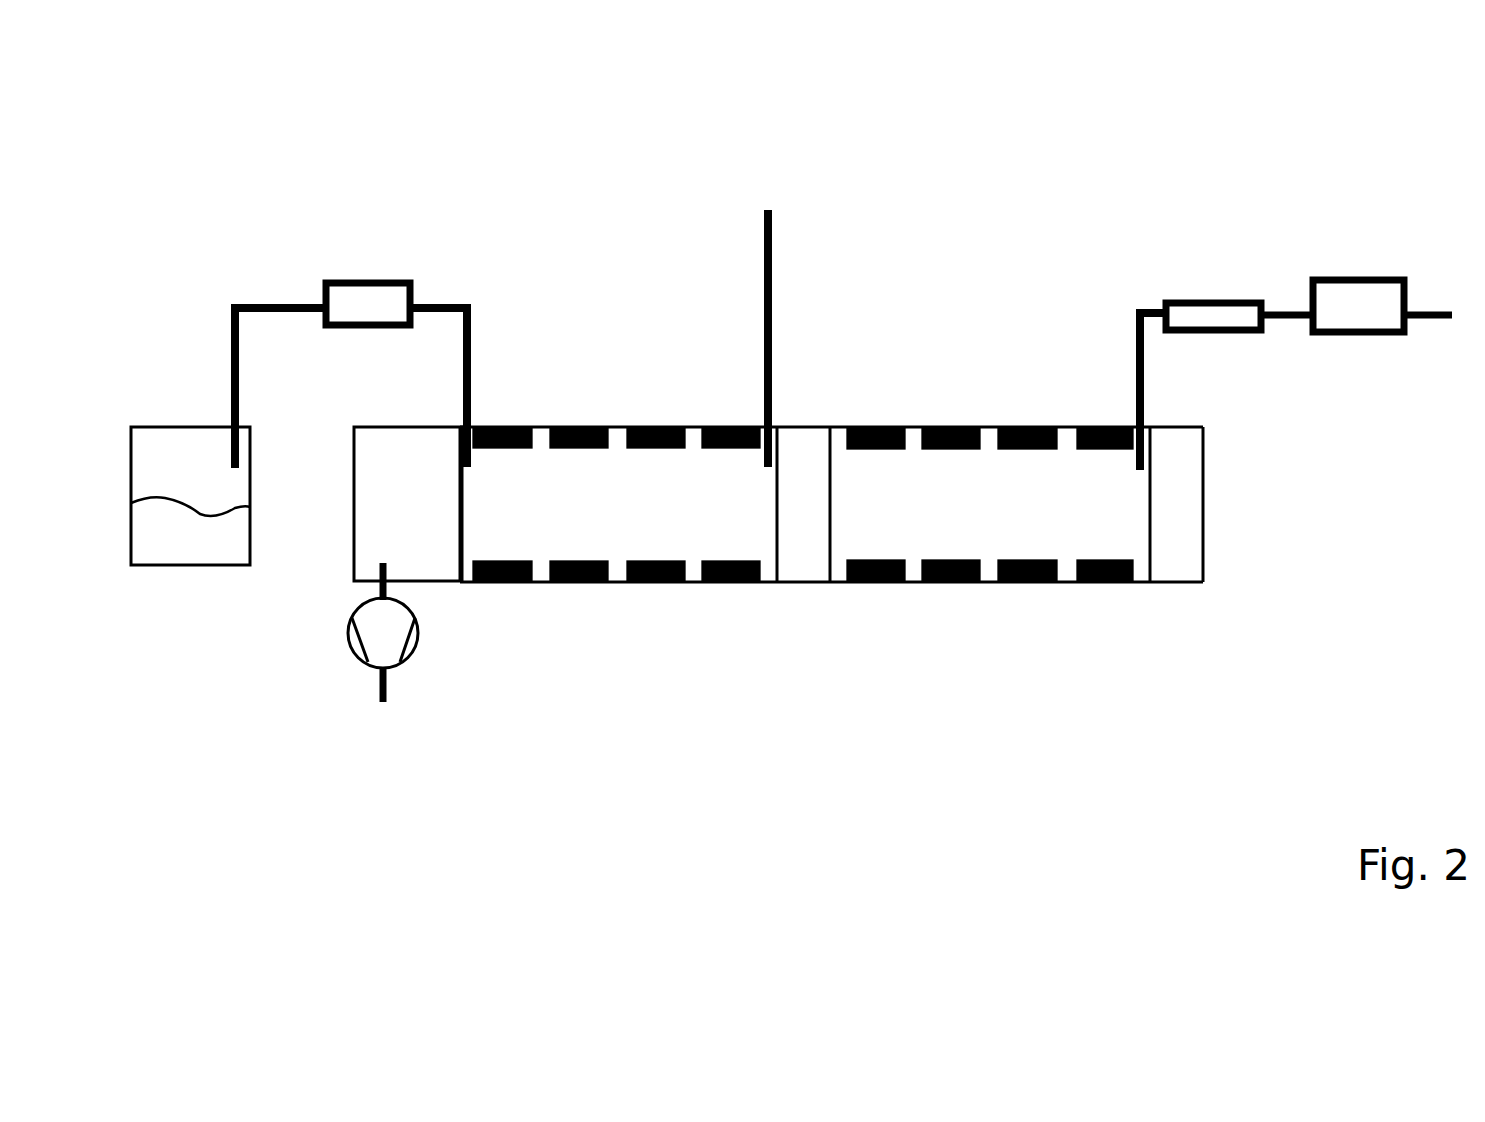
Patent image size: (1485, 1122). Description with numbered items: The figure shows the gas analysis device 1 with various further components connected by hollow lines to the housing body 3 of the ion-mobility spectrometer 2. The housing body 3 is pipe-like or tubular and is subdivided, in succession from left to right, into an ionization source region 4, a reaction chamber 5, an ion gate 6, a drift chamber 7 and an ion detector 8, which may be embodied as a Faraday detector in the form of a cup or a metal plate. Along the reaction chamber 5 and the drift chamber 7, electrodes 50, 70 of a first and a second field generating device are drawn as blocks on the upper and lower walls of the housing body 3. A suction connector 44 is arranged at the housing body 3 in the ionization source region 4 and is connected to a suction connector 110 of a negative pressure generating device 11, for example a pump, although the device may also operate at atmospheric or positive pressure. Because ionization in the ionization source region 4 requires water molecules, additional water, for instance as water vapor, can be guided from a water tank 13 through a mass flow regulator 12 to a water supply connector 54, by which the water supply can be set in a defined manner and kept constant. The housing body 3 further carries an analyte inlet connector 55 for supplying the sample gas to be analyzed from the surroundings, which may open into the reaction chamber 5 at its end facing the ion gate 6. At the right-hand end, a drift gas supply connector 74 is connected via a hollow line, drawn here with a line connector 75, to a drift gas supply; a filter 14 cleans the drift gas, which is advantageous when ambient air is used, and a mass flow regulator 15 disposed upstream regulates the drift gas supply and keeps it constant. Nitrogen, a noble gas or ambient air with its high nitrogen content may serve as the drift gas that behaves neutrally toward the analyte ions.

The gas analysis device 1 is at (478, 170).
The ion-mobility spectrometer 2 is at (913, 392).
The housing body 3 is at (358, 478).
The ionization source region 4 is at (390, 527).
The reaction chamber 5 is at (620, 540).
The ion gate 6 is at (808, 550).
The drift chamber 7 is at (993, 537).
The ion detector 8 is at (1177, 550).
The negative pressure generating device 11 is at (408, 657).
The mass flow regulator 12 is at (367, 283).
The water tank 13 is at (150, 427).
The filter 14 is at (1213, 302).
The mass flow regulator 15 is at (1357, 277).
The suction connector 44 is at (392, 582).
The electrodes of first field generating device 50 is at (710, 427).
The water supply connector 54 is at (473, 427).
The analyte inlet connector 55 is at (770, 425).
The electrodes of second field generating device 70 is at (1090, 428).
The drift gas supply connector 74 is at (1150, 428).
The outlet line 75 is at (1135, 340).
The suction connector 110 is at (347, 602).